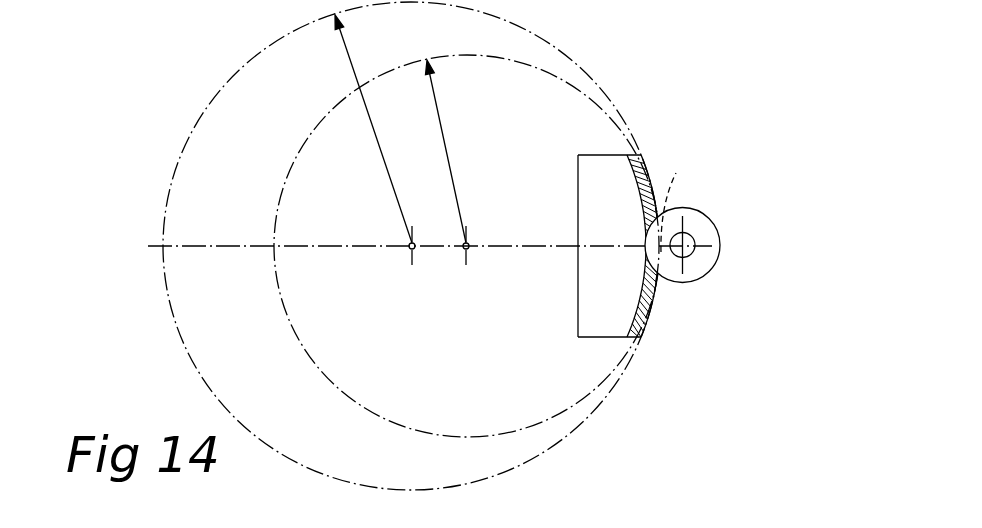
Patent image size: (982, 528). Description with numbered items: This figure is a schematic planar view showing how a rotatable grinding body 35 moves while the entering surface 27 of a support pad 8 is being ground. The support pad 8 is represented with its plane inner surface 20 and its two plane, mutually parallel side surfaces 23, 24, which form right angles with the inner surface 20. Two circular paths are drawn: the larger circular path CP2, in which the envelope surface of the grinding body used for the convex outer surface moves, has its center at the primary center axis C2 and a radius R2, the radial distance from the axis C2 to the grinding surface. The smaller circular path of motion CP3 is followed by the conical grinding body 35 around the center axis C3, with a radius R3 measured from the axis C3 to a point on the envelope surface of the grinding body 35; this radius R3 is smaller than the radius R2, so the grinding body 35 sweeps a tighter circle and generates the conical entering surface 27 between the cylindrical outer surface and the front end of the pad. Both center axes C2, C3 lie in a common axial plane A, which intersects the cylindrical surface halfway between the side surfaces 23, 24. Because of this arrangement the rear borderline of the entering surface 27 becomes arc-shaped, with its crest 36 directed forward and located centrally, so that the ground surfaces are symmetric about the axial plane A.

The support pad 8 is at (567, 292).
The inner surface 20 is at (578, 218).
The side surface 23 is at (599, 337).
The side surface 24 is at (602, 155).
The entering surface 27 is at (648, 303).
The grinding body 35 is at (721, 222).
The crest 36 is at (679, 201).
The axial plane A is at (311, 247).
The circular path CP2 is at (178, 332).
The circular path of motion CP3 is at (323, 375).
The primary center axis C2 is at (412, 261).
The center axis C3 is at (466, 261).
The radius R2 is at (373, 129).
The radius R3 is at (438, 151).